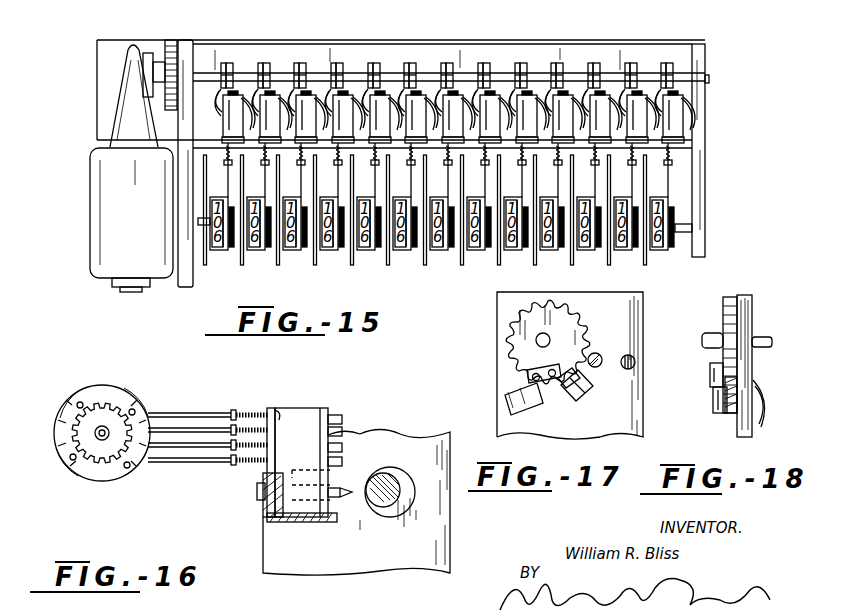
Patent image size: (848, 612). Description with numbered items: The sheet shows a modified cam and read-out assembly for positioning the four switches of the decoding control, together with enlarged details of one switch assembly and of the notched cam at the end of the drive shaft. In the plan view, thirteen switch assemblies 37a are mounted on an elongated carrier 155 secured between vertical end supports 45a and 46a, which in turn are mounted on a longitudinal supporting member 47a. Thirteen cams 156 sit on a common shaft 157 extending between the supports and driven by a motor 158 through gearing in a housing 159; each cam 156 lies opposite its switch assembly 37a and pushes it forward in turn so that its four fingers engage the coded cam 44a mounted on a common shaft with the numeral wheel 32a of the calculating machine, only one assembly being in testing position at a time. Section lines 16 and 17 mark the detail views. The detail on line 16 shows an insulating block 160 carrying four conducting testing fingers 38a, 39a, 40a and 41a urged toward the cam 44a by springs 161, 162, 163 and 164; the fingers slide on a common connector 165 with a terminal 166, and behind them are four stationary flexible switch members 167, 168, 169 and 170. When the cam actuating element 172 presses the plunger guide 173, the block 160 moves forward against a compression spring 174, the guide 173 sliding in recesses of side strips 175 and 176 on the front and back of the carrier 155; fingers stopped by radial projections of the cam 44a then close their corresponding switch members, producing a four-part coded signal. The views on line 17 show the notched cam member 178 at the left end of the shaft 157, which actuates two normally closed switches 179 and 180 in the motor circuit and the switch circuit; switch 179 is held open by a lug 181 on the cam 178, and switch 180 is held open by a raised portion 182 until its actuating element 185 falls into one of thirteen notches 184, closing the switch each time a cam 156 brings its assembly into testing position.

In FIG. 15, the longitudinal supporting member 47a is at (355, 56).
In FIG. 15, the elongated carrier 155 is at (188, 149).
In FIG. 16, the elongated carrier 155 is at (292, 470).
In FIG. 15, the vertical end support 46a is at (188, 52).
In FIG. 17, the vertical end support 46a is at (634, 336).
In FIG. 18, the vertical end support 46a is at (751, 308).
In FIG. 15, the vertical end support 45a is at (704, 62).
In FIG. 15, the common shaft 157 is at (652, 71).
In FIG. 18, the common shaft 157 is at (759, 336).
In FIG. 15, the notched cam member 178 is at (170, 40).
In FIG. 17, the notched cam member 178 is at (510, 347).
In FIG. 18, the notched cam member 178 is at (729, 297).
In FIG. 15, the housing 159 is at (128, 95).
In FIG. 15, the motor 158 is at (151, 217).
In FIG. 15, the cam 156 is at (232, 64).
In FIG. 16, the cam 156 is at (406, 506).
In FIG. 15, the switch assembly 37a is at (278, 95).
In FIG. 16, the switch assembly 37a is at (316, 397).
In FIG. 15, the testing finger 38a is at (674, 188).
In FIG. 16, the testing finger 38a is at (179, 413).
In FIG. 16, the testing finger 39a is at (201, 429).
In FIG. 16, the testing finger 40a is at (175, 448).
In FIG. 16, the testing finger 41a is at (191, 463).
In FIG. 15, the numeral wheel 32a is at (641, 256).
In FIG. 16, the numeral wheel 32a is at (130, 393).
In FIG. 15, the cam 44a is at (345, 261).
In FIG. 16, the cam 44a is at (86, 398).
In FIG. 15, the section line 16— 16 is at (240, 39).
In FIG. 15, the section line 17— 17 is at (160, 39).
In FIG. 16, the spring 161 is at (237, 410).
In FIG. 16, the spring 162 is at (252, 426).
In FIG. 16, the spring 163 is at (240, 461).
In FIG. 16, the spring 164 is at (253, 470).
In FIG. 16, the block 160 is at (311, 410).
In FIG. 16, the common connector 165 is at (277, 437).
In FIG. 16, the terminal 166 is at (281, 416).
In FIG. 16, the stationary flexible switch member 167 is at (341, 418).
In FIG. 16, the stationary flexible switch member 168 is at (343, 431).
In FIG. 16, the stationary flexible switch member 169 is at (343, 447).
In FIG. 16, the stationary flexible switch member 170 is at (347, 492).
In FIG. 16, the actuating element 172 is at (343, 498).
In FIG. 16, the plunger guide 173 is at (265, 498).
In FIG. 16, the compression spring 174 is at (283, 523).
In FIG. 16, the side strip 175 is at (268, 519).
In FIG. 16, the side strip 176 is at (326, 517).
In FIG. 17, the notch 184 is at (502, 308).
In FIG. 17, the lug 181 is at (550, 367).
In FIG. 18, the lug 181 is at (710, 372).
In FIG. 17, the raised portion 182 is at (592, 366).
In FIG. 17, the actuating element 185 is at (586, 390).
In FIG. 17, the switch 179 is at (506, 398).
In FIG. 18, the switch 179 is at (713, 407).
In FIG. 17, the switch 180 is at (568, 392).
In FIG. 18, the switch 180 is at (731, 414).